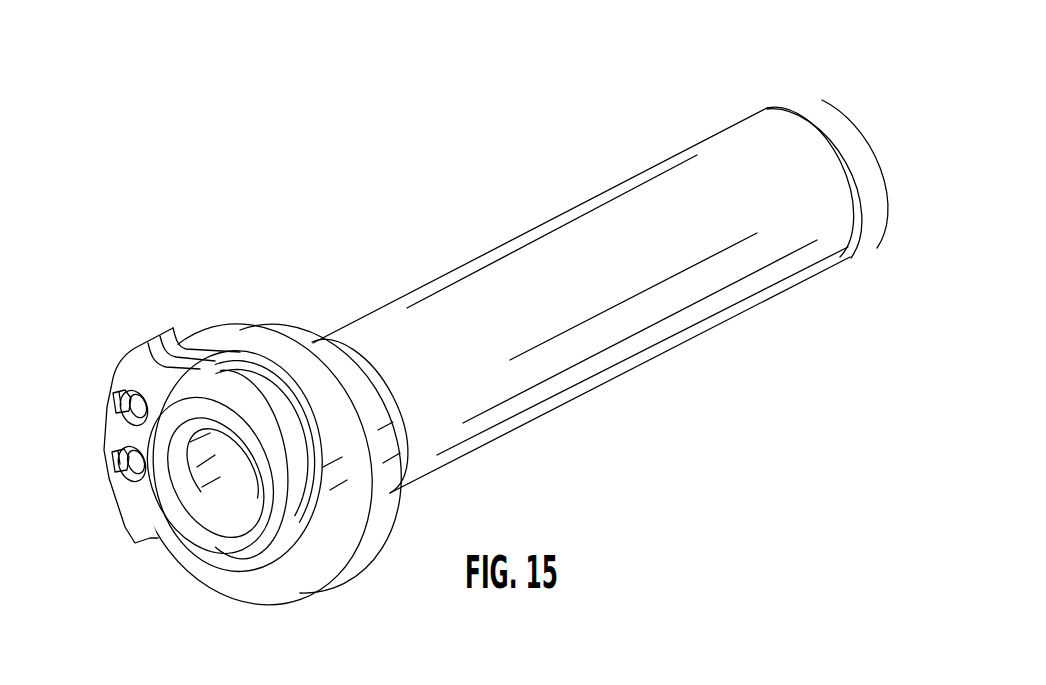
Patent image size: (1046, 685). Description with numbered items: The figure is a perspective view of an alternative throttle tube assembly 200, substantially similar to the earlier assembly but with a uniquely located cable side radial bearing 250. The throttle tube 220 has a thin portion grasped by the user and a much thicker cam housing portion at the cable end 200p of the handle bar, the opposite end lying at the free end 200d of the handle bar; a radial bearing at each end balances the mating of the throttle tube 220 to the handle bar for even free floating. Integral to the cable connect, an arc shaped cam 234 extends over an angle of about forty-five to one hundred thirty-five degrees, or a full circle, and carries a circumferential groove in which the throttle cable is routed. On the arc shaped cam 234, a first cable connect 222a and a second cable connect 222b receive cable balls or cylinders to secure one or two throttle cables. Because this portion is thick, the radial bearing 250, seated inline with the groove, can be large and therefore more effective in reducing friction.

The assembly 200 is at (676, 60).
The free end of the handle bar 200d is at (871, 137).
The cable end of the handle bar 200p is at (203, 448).
The throttle tube 220 is at (552, 262).
The arc shaped cam 234 is at (135, 372).
The first cable connect 222a is at (120, 405).
The second cable connect 222b is at (118, 468).
The cable side radial bearing 250 is at (257, 560).